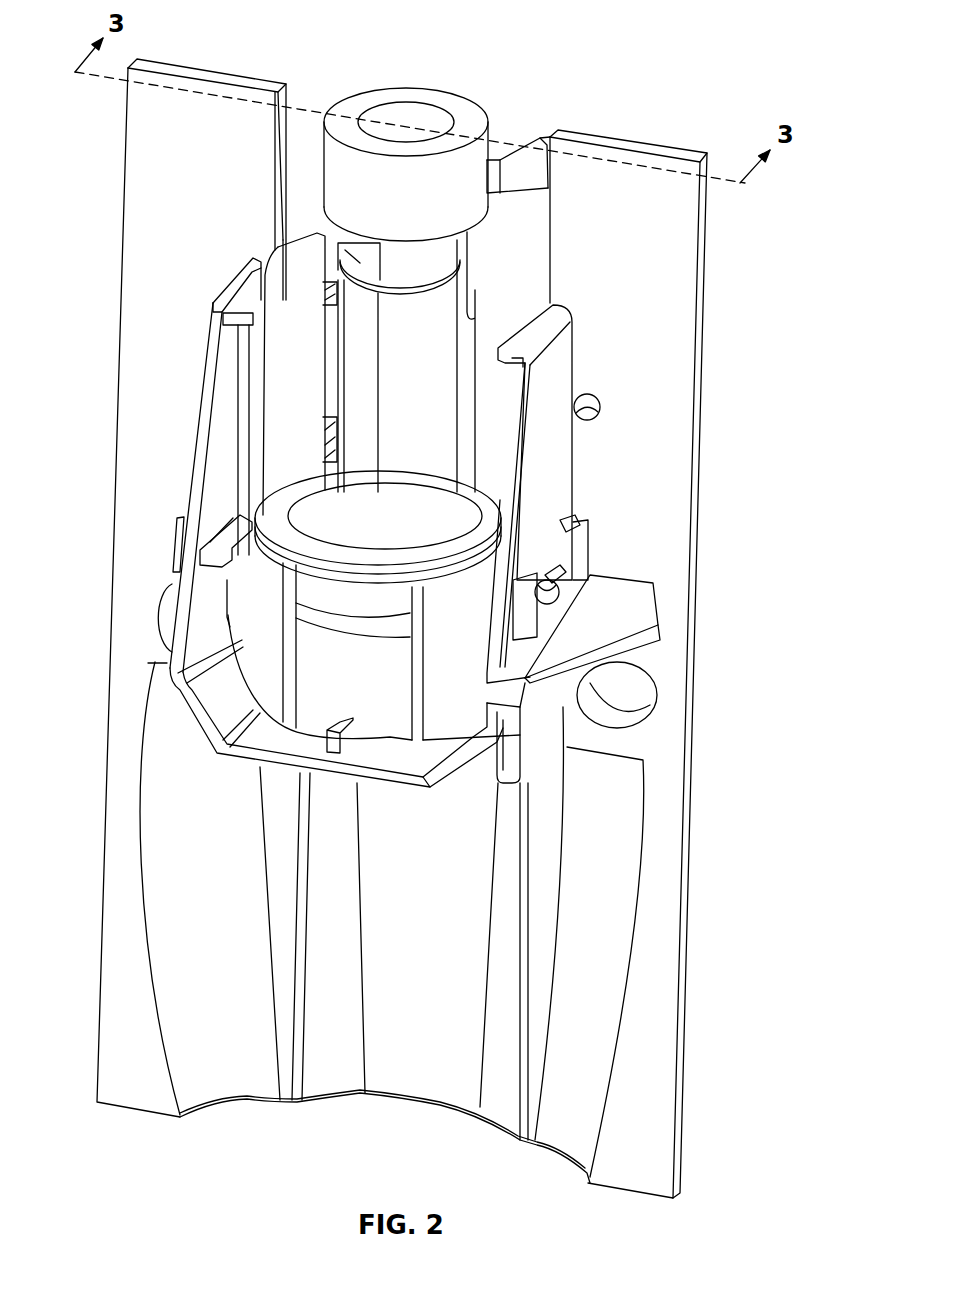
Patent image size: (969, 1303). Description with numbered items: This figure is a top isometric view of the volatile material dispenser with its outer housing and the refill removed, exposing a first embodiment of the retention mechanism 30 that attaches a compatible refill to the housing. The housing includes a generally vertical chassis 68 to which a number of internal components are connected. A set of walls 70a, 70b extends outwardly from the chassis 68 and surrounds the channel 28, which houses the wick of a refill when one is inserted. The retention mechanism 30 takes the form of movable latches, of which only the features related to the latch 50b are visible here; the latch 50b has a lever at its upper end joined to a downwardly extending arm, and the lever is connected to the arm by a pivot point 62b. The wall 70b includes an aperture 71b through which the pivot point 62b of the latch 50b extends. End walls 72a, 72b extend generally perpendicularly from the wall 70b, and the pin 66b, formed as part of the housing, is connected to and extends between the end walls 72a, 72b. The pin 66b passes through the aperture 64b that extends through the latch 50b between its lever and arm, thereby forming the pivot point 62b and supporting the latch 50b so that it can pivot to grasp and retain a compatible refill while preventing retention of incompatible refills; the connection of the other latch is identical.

The channel 28 is at (411, 124).
The chassis 68 is at (132, 312).
The wall 70a is at (195, 487).
The wall 70b is at (543, 370).
The aperture 71b is at (543, 557).
The pivot point 62b is at (568, 523).
The end wall 72b is at (588, 537).
The aperture 64b is at (553, 577).
The pin 66b is at (550, 592).
The end wall 72a is at (523, 620).
The movable latch 50b is at (535, 743).
The retention mechanism 30 is at (540, 777).